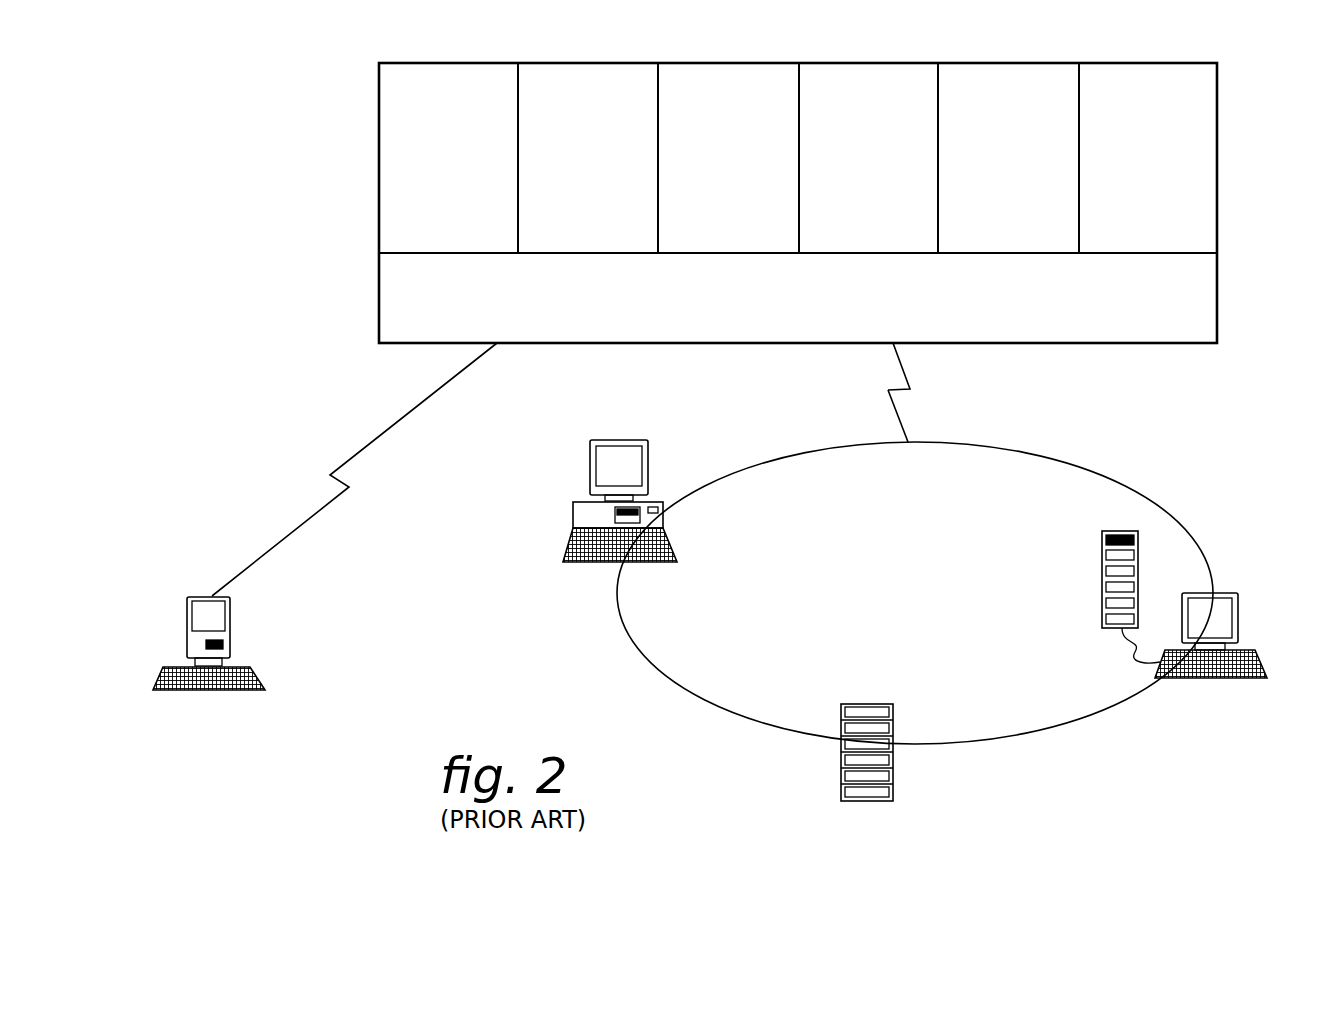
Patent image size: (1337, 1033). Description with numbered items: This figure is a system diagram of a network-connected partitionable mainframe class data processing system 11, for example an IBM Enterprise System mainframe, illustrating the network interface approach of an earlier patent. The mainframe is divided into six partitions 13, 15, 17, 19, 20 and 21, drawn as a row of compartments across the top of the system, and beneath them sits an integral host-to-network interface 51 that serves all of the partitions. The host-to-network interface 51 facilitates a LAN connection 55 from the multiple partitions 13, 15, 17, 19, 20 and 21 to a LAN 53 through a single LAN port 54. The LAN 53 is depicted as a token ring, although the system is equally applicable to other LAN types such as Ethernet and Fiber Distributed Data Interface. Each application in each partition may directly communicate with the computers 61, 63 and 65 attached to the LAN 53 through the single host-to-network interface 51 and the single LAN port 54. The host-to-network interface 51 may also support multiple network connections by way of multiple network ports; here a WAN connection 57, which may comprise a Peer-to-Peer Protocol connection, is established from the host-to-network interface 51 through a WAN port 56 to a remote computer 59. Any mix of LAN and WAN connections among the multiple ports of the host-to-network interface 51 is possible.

The partitionable mainframe class data processing system 11 is at (1217, 148).
The partition 13 is at (433, 169).
The partition 15 is at (565, 169).
The partition 17 is at (699, 169).
The partition 19 is at (853, 167).
The partition 20 is at (990, 169).
The partition 21 is at (1123, 167).
The host-to-network interface 51 is at (1067, 312).
The LAN 53 is at (997, 735).
The LAN port 54 is at (897, 352).
The LAN connection 55 is at (890, 407).
The WAN port 56 is at (498, 345).
The WAN connection 57 is at (410, 405).
The computer 59 is at (230, 617).
The computer 61 is at (665, 515).
The computer 63 is at (870, 704).
The computer 65 is at (1240, 618).